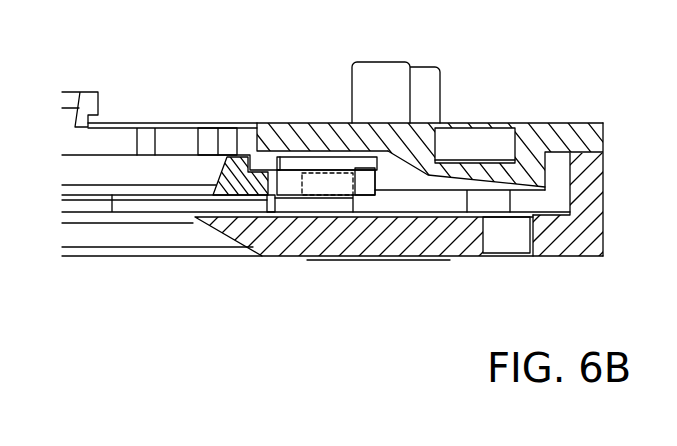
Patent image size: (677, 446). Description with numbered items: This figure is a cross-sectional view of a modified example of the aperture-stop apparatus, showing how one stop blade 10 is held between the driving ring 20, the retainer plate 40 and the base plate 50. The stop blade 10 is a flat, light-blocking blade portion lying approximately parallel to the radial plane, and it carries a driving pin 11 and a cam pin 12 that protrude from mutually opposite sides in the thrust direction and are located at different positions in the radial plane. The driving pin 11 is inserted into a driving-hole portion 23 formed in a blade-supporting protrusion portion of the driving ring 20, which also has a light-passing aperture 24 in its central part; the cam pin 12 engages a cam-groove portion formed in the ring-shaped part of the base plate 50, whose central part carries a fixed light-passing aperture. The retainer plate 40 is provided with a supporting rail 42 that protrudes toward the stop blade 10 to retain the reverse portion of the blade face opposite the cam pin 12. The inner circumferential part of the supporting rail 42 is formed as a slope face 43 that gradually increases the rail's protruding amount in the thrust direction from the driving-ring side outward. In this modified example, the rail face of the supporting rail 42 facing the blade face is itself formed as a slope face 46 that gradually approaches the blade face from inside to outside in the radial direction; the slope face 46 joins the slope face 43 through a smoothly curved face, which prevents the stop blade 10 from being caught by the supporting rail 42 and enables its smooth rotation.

The stop blade 10 is at (443, 218).
The driving pin 11 is at (322, 205).
The cam pin 12 is at (512, 232).
The driving ring 20 is at (268, 170).
The driving-hole portion 23 is at (368, 172).
The light-passing aperture 24 is at (140, 185).
The retainer plate 40 is at (552, 135).
The supporting rail 42 is at (425, 165).
The slope face 43 is at (425, 150).
The slope face 46 is at (500, 160).
The base plate 50 is at (357, 243).